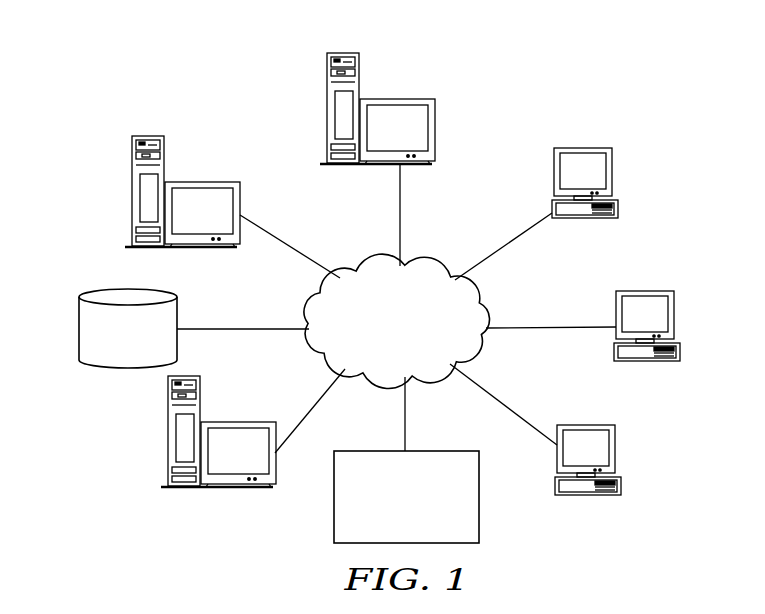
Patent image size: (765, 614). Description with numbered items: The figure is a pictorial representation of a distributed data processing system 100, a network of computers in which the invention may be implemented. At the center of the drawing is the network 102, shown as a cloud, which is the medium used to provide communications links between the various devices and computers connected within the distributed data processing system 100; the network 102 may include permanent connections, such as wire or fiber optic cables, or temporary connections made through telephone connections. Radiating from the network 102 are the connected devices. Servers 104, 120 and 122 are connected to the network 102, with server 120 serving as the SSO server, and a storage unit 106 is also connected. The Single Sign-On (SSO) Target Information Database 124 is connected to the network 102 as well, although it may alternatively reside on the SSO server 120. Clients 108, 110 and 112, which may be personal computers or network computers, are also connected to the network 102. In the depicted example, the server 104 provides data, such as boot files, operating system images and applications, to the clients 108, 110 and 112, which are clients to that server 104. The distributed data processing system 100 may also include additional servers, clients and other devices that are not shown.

The distributed data processing system 100 is at (583, 89).
The network 102 is at (378, 332).
The server 104 is at (200, 182).
The storage unit 106 is at (79, 329).
The client 108 is at (612, 172).
The client 110 is at (674, 314).
The client 112 is at (615, 452).
The SSO server 120 is at (238, 422).
The server 122 is at (393, 97).
The Single Sign-On Target Information Database 124 is at (480, 527).